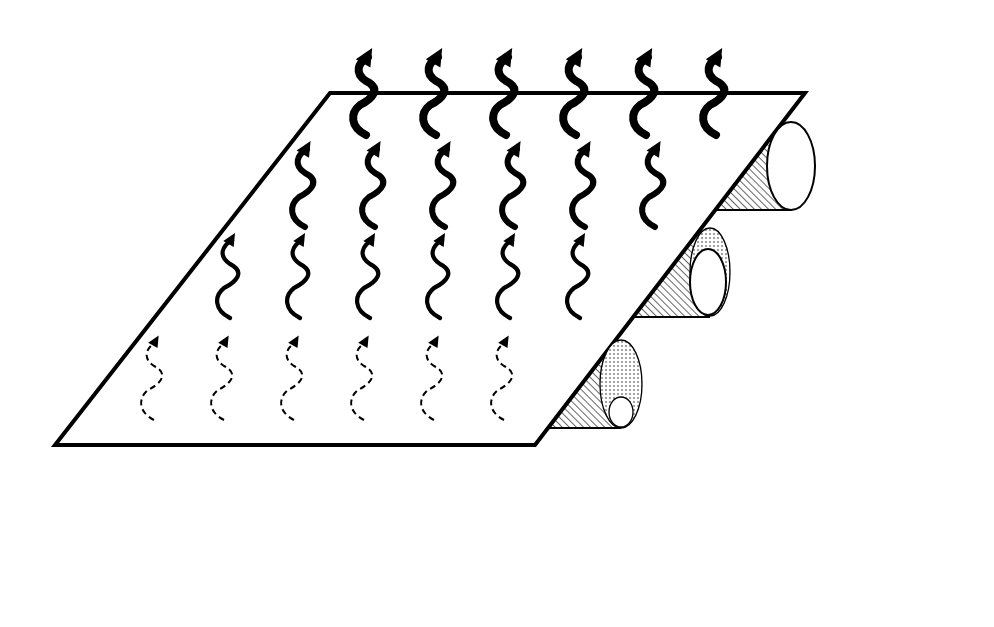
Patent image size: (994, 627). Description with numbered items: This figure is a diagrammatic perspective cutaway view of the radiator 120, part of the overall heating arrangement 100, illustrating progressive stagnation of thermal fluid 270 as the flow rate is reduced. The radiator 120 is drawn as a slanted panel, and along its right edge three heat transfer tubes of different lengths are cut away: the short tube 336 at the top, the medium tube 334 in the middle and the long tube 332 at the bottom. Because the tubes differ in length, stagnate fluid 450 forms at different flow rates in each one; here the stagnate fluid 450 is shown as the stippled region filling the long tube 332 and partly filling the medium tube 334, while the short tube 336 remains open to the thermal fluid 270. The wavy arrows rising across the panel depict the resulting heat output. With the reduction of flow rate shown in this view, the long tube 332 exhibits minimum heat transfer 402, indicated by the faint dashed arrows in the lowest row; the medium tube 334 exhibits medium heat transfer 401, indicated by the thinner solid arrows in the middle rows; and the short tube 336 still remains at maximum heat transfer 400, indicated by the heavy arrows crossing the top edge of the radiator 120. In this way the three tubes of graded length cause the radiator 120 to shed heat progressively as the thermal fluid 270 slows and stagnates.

The apparatus 100 is at (146, 44).
The radiator 120 is at (175, 151).
The maximum heat transfer 400 is at (296, 97).
The medium heat transfer 401 is at (207, 196).
The minimum heat transfer 402 is at (141, 307).
The thermal fluid 270 is at (793, 176).
The long tube 332 is at (585, 429).
The medium tube 334 is at (677, 318).
The short tube 336 is at (763, 212).
The stagnate fluid 450 is at (720, 241).